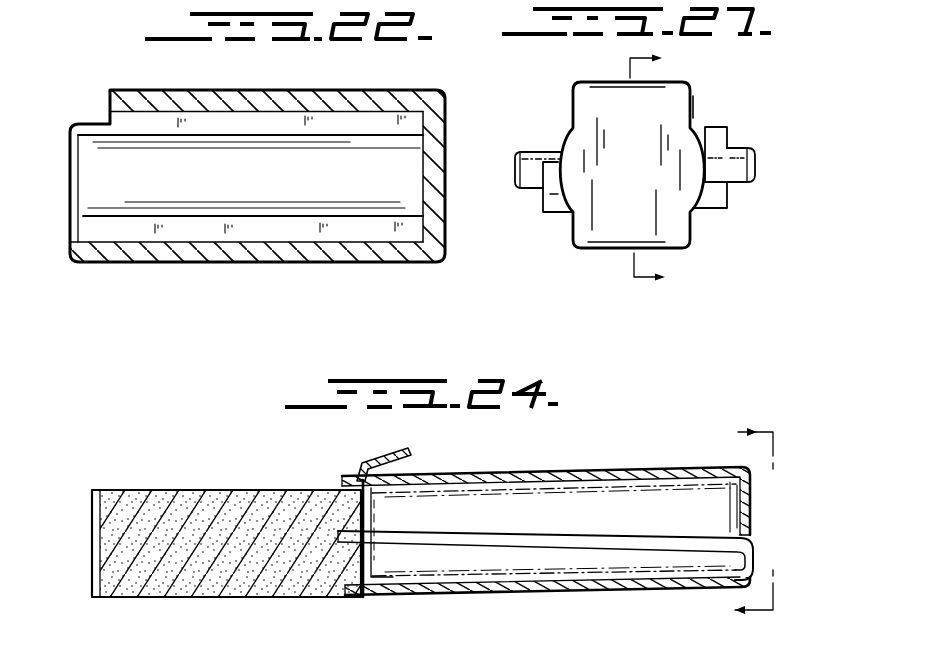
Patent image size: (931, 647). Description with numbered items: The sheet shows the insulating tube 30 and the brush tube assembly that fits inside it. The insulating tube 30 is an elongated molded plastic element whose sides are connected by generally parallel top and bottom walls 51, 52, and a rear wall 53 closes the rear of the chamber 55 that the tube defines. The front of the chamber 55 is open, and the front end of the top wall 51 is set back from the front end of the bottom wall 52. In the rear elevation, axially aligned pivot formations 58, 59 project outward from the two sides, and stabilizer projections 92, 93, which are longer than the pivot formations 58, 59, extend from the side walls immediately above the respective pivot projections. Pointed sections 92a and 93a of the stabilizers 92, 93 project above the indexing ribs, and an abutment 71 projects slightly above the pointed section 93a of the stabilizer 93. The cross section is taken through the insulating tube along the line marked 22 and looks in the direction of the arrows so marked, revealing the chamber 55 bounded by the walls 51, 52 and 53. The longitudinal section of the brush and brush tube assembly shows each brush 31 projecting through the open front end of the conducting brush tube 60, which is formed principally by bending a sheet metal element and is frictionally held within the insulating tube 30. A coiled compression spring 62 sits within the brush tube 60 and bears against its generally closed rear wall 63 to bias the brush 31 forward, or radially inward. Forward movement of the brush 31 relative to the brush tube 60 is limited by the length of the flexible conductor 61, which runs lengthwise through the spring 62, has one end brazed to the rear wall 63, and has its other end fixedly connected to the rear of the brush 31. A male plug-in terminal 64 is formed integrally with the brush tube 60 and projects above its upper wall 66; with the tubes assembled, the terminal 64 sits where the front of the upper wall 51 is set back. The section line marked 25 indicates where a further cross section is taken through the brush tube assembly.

In FIG. 22, the insulating tube 30 is at (263, 183).
In FIG. 21, the insulating tube 30 is at (630, 188).
In FIG. 24, the brush 31 is at (226, 489).
In FIG. 22, the top wall 51 is at (266, 89).
In FIG. 21, the top wall 51 is at (602, 80).
In FIG. 21, the bottom wall 52 is at (627, 255).
In FIG. 22, the rear wall 53 is at (450, 149).
In FIG. 21, the rear wall 53 is at (590, 101).
In FIG. 22, the chamber 55 is at (92, 177).
In FIG. 21, the pivot formation 58 is at (543, 200).
In FIG. 21, the pivot formation 59 is at (727, 205).
In FIG. 21, the abutment 71 is at (716, 125).
In FIG. 21, the stabilizer projection 92 is at (515, 167).
In FIG. 21, the pointed section 92a is at (551, 136).
In FIG. 21, the stabilizer projection 93 is at (750, 166).
In FIG. 21, the pointed section 93a is at (741, 148).
In FIG. 24, the brush tube 60 is at (559, 531).
In FIG. 24, the flexible conductor 61 is at (585, 535).
In FIG. 24, the coiled compression spring 62 is at (393, 580).
In FIG. 24, the rear wall 63 is at (749, 479).
In FIG. 24, the male plug-in terminal 64 is at (375, 452).
In FIG. 24, the upper wall 66 is at (545, 450).
In FIG. 21, the field stack 22 is at (666, 169).
In FIG. 24, the section line 25- 25 is at (735, 524).